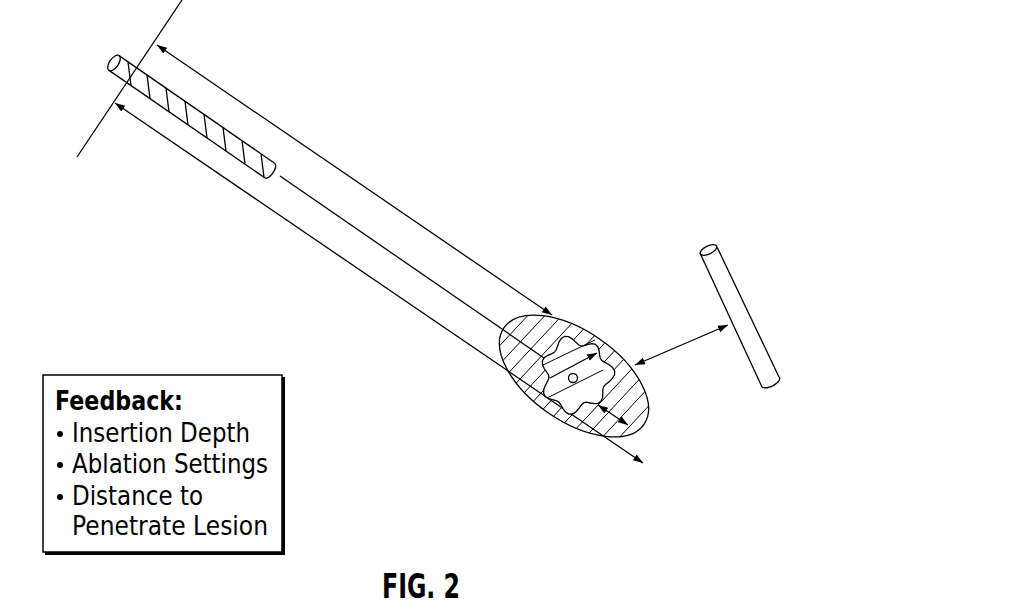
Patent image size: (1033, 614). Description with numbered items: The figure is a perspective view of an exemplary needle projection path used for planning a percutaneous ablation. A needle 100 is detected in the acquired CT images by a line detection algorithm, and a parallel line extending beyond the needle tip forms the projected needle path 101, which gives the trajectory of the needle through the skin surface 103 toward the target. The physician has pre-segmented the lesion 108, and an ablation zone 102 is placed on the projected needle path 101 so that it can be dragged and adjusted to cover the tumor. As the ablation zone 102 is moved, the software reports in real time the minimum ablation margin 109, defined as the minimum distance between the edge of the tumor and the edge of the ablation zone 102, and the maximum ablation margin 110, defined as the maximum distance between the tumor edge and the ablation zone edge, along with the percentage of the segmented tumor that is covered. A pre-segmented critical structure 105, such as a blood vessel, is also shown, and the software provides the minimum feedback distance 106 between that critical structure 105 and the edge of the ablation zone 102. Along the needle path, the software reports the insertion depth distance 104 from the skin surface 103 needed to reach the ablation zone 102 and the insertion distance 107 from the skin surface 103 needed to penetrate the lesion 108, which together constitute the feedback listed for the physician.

The needle 100 is at (217, 120).
The projected needle path 101 is at (328, 209).
The ablation zone 102 is at (553, 423).
The skin surface 103 is at (175, 10).
The insertion depth distance 104 is at (233, 183).
The critical structure 105 is at (735, 277).
The minimum feedback distance between critical structure and edge of ablation zone 106 is at (673, 351).
The insertion distance from skin surface to penetrate lesion 107 is at (310, 150).
The pre-segmented lesion 108 is at (577, 333).
The minimum ablation margin 109 is at (608, 335).
The maximum ablation margin 110 is at (643, 393).